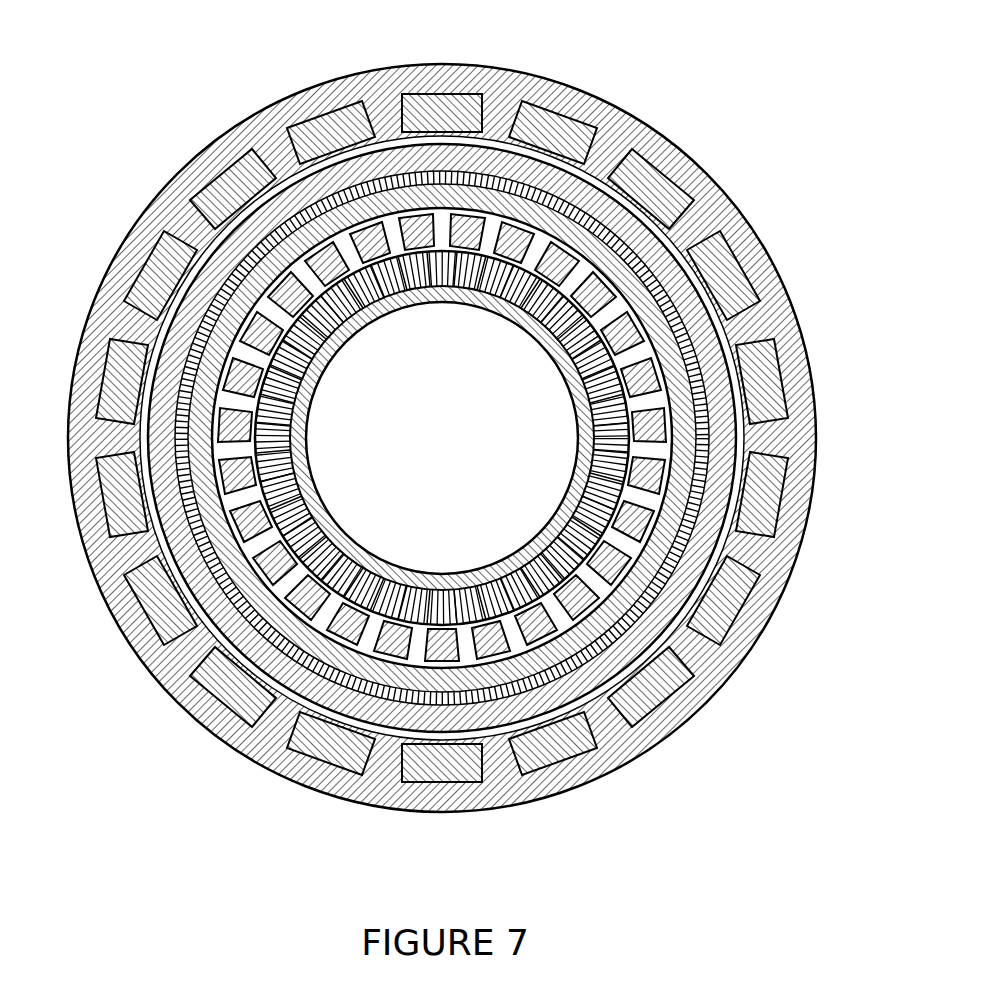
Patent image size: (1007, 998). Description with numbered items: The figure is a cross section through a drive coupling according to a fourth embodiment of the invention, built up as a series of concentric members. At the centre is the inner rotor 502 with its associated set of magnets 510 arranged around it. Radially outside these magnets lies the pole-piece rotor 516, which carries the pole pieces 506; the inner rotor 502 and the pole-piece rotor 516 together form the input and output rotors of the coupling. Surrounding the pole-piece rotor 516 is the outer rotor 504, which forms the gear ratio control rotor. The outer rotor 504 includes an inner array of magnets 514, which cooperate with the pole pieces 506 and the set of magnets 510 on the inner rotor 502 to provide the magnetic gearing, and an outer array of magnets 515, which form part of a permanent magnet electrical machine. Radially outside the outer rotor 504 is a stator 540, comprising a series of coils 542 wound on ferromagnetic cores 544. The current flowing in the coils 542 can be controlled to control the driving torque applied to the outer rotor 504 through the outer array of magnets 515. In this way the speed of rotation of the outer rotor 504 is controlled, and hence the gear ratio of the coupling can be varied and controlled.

The inner rotor 502 is at (375, 312).
The outer rotor 504 is at (487, 180).
The pole pieces 506 is at (573, 383).
The set of magnets 510 is at (300, 502).
The inner array of magnets 514 is at (677, 257).
The outer array of magnets 515 is at (640, 633).
The pole-piece rotor 516 is at (570, 508).
The stator 540 is at (757, 622).
The coils 542 is at (770, 530).
The ferromagnetic cores 544 is at (757, 440).